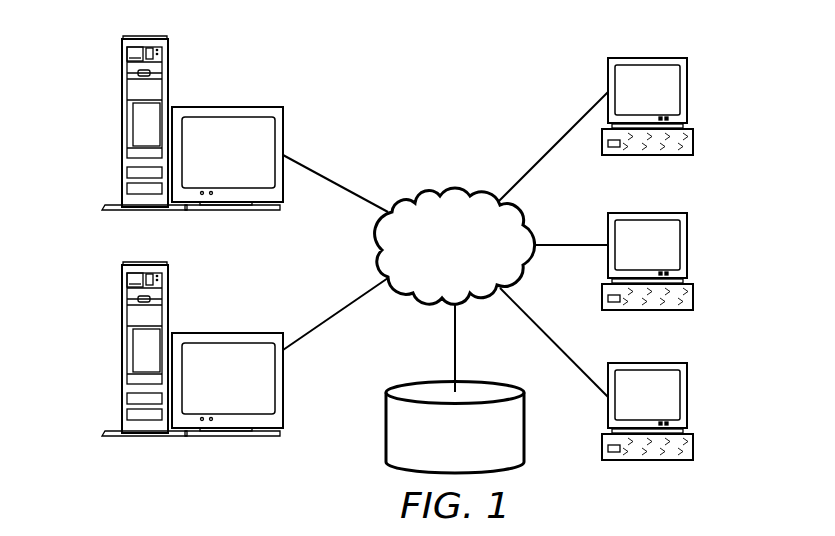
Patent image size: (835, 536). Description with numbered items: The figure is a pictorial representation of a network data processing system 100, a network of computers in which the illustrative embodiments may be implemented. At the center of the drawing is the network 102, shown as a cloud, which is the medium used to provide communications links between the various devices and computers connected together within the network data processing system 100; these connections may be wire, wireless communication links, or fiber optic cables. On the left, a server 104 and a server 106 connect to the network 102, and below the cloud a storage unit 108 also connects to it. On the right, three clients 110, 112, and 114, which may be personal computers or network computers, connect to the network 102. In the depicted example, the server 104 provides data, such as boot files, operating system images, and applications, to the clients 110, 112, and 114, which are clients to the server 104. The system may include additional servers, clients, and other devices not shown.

The network data processing system 100 is at (505, 86).
The network 102 is at (423, 193).
The server 104 is at (122, 123).
The server 106 is at (122, 349).
The storage unit 108 is at (385, 438).
The client 110 is at (687, 90).
The client 112 is at (687, 243).
The client 114 is at (687, 397).